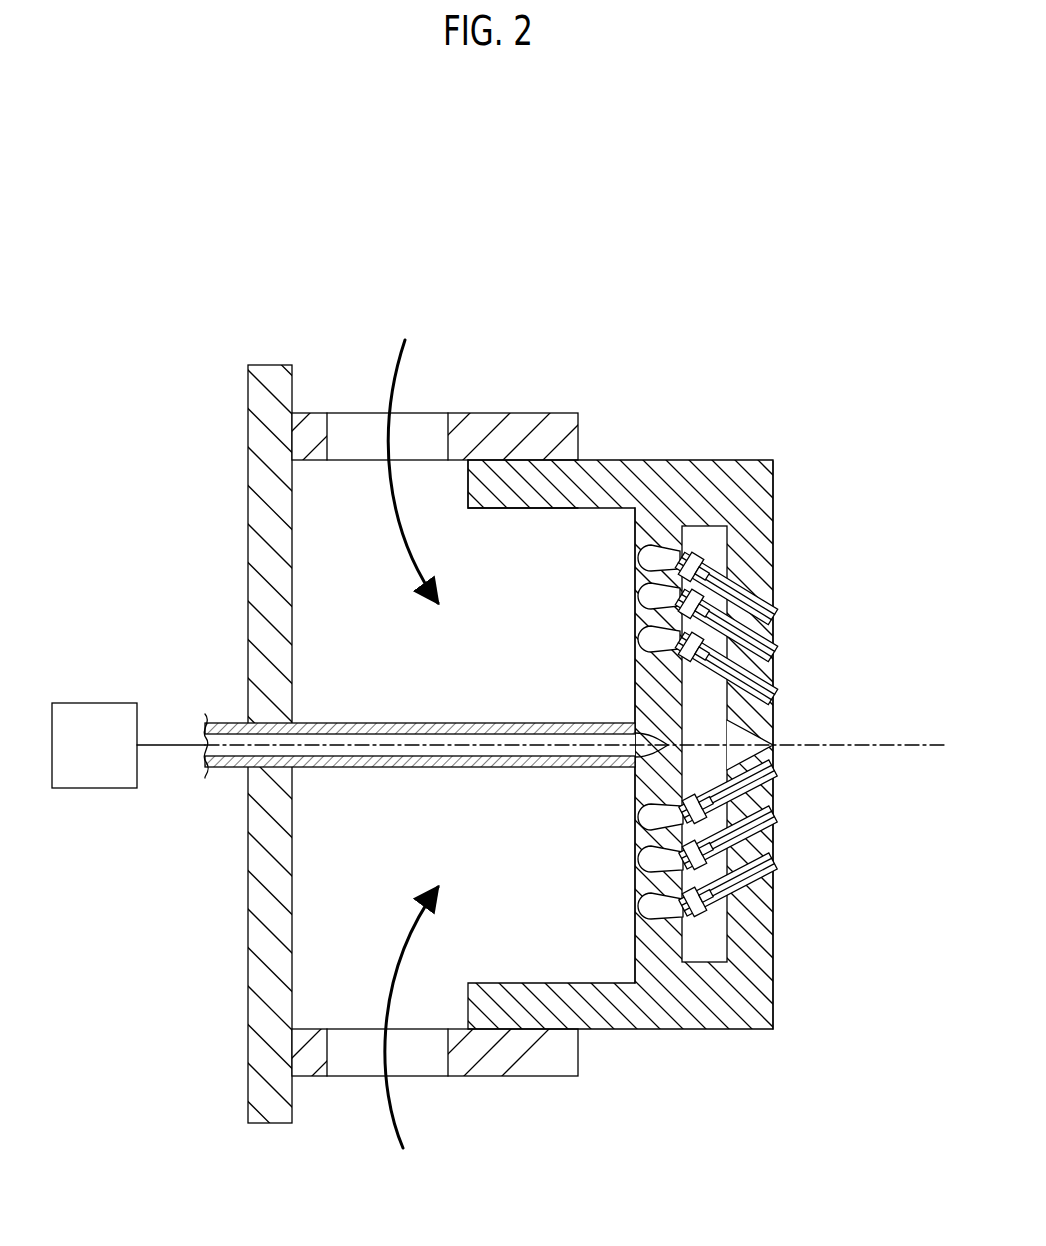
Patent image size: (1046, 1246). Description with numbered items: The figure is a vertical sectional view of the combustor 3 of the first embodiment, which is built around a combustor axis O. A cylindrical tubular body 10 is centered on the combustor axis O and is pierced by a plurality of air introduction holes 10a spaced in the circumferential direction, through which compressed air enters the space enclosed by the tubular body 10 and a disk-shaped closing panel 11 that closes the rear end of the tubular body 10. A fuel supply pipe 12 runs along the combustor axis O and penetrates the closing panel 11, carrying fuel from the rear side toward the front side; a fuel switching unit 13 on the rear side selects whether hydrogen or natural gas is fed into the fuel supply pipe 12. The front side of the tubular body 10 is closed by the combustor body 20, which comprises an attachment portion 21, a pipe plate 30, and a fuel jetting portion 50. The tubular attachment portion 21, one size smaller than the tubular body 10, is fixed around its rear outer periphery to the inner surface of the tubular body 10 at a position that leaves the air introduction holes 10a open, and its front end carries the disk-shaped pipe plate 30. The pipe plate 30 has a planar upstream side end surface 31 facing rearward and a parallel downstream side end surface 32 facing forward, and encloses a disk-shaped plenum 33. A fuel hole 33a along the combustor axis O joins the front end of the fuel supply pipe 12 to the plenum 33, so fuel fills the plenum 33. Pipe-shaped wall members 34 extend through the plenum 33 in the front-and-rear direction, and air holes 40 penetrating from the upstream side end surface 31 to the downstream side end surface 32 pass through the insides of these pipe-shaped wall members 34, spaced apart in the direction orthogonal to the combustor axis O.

The combustor 3 is at (773, 322).
The tubular body 10 is at (512, 438).
The air introduction holes 10a is at (446, 446).
The closing panel 11 is at (262, 430).
The fuel supply pipe 12 is at (345, 723).
The fuel switching unit 13 is at (92, 703).
The combustor body 20 is at (523, 688).
The attachment portion 21 is at (541, 490).
The pipe plate 30 is at (523, 689).
The upstream side end surface 31 is at (635, 640).
The downstream side end surface 32 is at (773, 558).
The plenum 33 is at (708, 547).
The fuel hole 33a is at (648, 745).
The pipe-shaped wall members 34 is at (773, 612).
The air holes 40 is at (638, 558).
The fuel jetting portion 50 is at (704, 570).
The combustor axis O is at (903, 745).